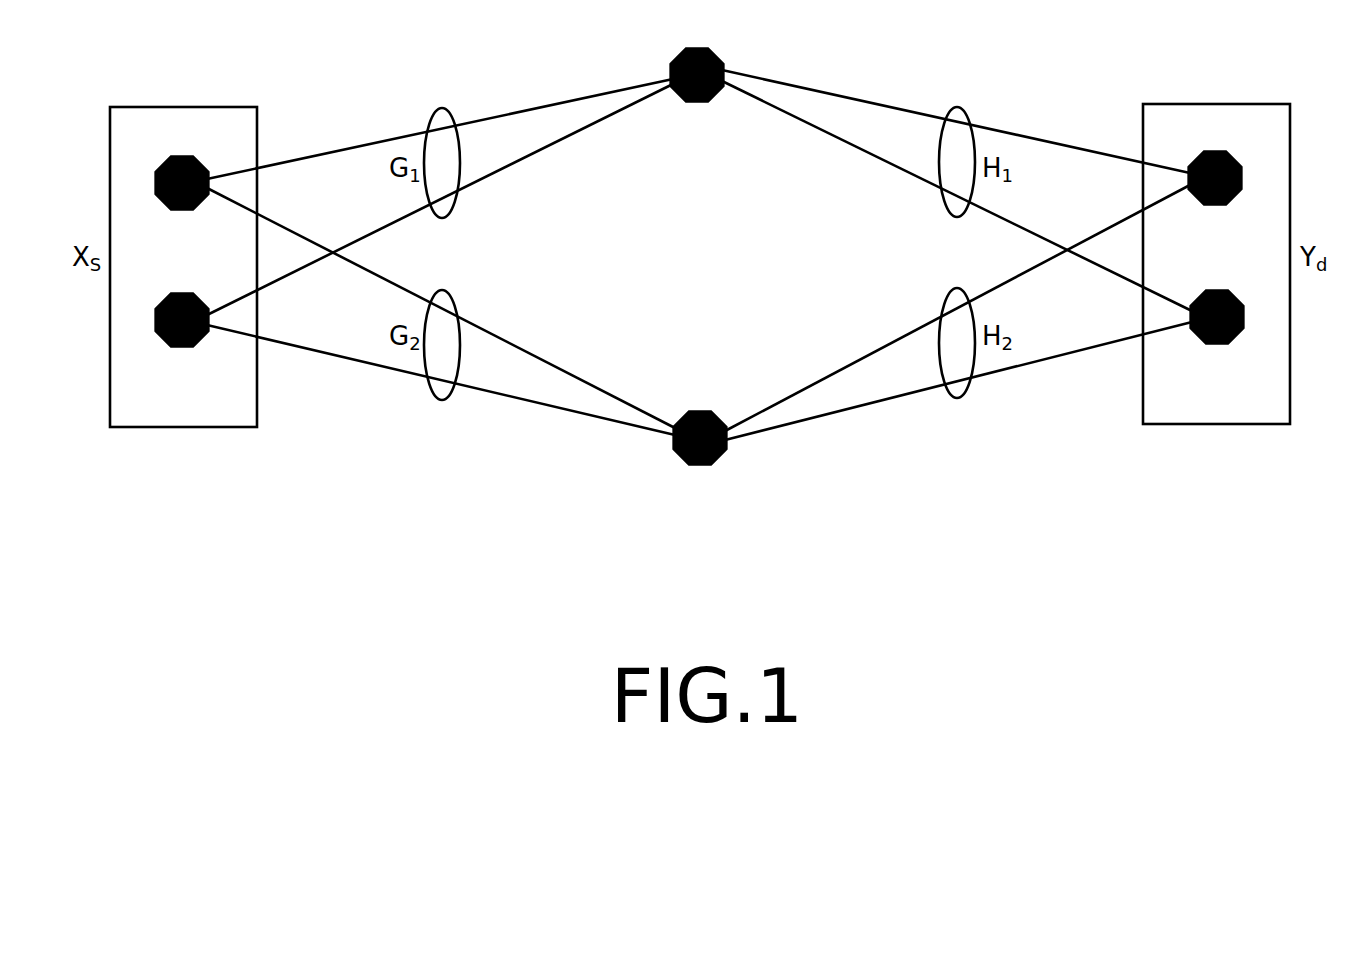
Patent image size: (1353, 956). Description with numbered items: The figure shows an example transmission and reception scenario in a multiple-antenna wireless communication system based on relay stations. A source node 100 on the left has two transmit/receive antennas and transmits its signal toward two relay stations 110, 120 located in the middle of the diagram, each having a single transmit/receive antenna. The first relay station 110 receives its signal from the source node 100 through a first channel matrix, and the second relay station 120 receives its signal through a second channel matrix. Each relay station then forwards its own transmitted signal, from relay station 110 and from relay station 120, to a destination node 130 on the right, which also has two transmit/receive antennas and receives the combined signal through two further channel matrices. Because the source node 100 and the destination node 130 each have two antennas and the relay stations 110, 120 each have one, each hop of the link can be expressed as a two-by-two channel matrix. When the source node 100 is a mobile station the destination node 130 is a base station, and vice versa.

The source node 100 is at (190, 427).
The first relay station (RS1) 110 is at (722, 70).
The second relay station (RS2) 120 is at (698, 413).
The destination node 130 is at (1217, 424).